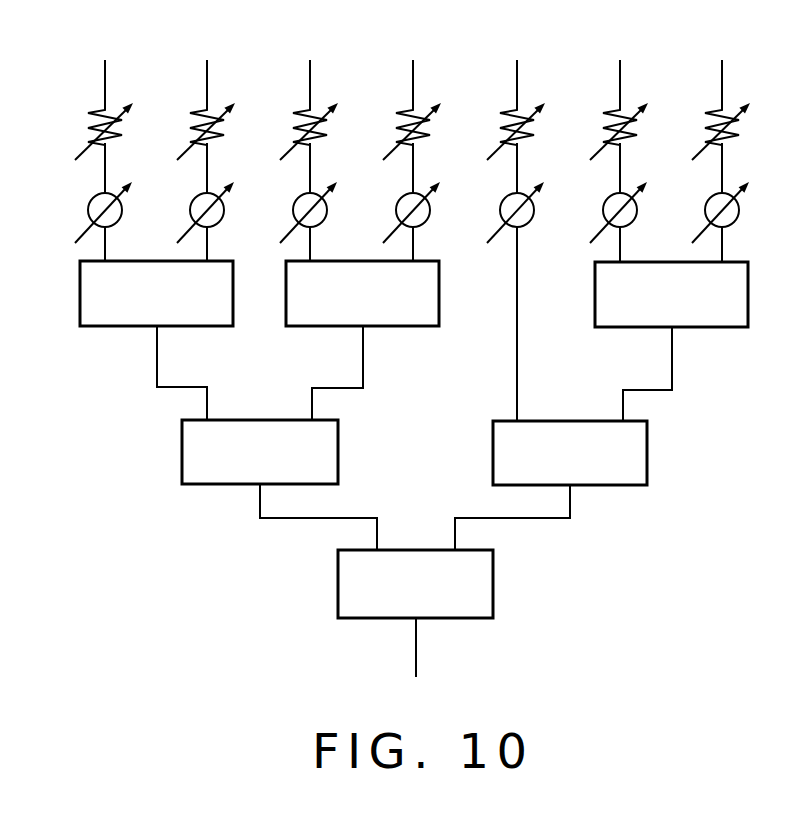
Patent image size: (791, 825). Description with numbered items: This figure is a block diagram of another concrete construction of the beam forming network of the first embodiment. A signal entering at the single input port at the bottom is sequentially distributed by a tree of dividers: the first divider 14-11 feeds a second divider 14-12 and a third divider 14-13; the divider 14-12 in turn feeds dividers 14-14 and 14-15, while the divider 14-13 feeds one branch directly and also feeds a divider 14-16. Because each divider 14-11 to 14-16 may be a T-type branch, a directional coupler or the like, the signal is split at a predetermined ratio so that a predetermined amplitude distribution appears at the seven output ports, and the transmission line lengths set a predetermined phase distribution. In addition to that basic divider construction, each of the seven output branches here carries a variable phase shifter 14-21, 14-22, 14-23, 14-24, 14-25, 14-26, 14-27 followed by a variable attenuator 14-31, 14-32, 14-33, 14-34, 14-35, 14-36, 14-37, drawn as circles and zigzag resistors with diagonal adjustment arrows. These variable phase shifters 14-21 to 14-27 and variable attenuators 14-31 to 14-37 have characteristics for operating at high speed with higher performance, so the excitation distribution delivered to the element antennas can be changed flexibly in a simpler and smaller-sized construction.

The divider 14-11 is at (493, 590).
The divider 14-12 is at (207, 484).
The divider 14-13 is at (622, 485).
The divider 14-14 is at (202, 326).
The divider 14-15 is at (412, 326).
The divider 14-16 is at (724, 328).
The variable phase shifter 14-21 is at (88, 205).
The variable phase shifter 14-22 is at (190, 205).
The variable phase shifter 14-23 is at (293, 205).
The variable phase shifter 14-24 is at (396, 205).
The variable phase shifter 14-25 is at (500, 205).
The variable phase shifter 14-26 is at (603, 205).
The variable phase shifter 14-27 is at (705, 205).
The variable attenuator 14-31 is at (82, 118).
The variable attenuator 14-32 is at (184, 118).
The variable attenuator 14-33 is at (287, 118).
The variable attenuator 14-34 is at (390, 118).
The variable attenuator 14-35 is at (494, 118).
The variable attenuator 14-36 is at (597, 118).
The variable attenuator 14-37 is at (699, 118).